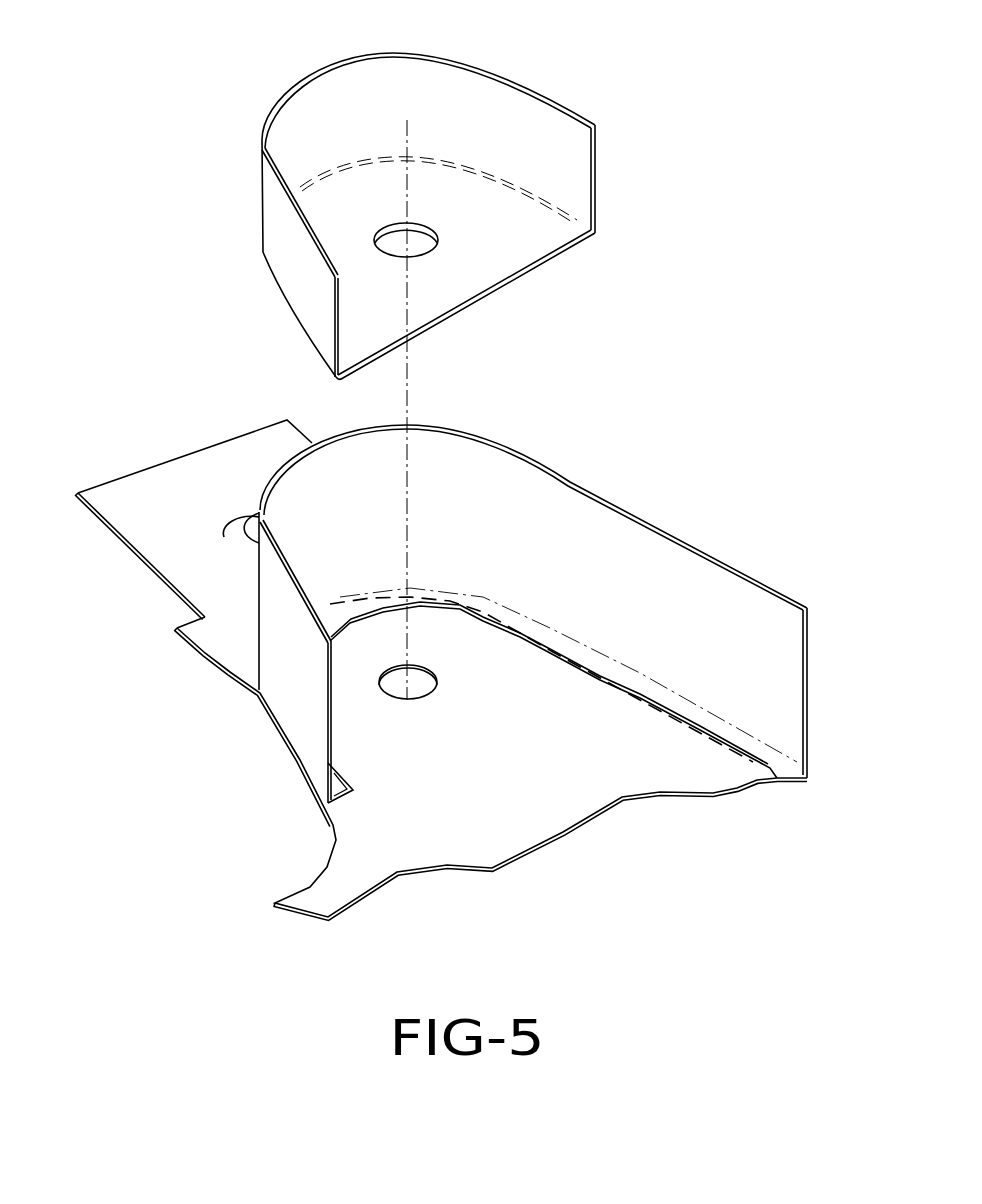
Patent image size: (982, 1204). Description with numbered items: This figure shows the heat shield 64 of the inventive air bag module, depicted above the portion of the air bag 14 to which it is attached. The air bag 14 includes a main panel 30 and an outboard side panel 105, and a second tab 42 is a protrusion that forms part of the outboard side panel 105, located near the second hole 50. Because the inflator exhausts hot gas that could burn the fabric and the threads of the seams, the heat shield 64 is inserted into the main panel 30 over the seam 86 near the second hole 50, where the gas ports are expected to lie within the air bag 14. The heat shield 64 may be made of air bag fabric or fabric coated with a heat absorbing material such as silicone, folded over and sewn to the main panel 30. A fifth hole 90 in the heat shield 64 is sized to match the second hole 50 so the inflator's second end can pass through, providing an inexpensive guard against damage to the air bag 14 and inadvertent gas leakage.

The air bag 14 is at (238, 841).
The main panel 30 is at (659, 627).
The second tab 42 is at (162, 493).
The second hole 50 is at (423, 685).
The heat shield 64 is at (510, 295).
The seam 86 is at (552, 633).
The fifth hole 90 is at (435, 253).
The outboard side panel 105 is at (493, 832).